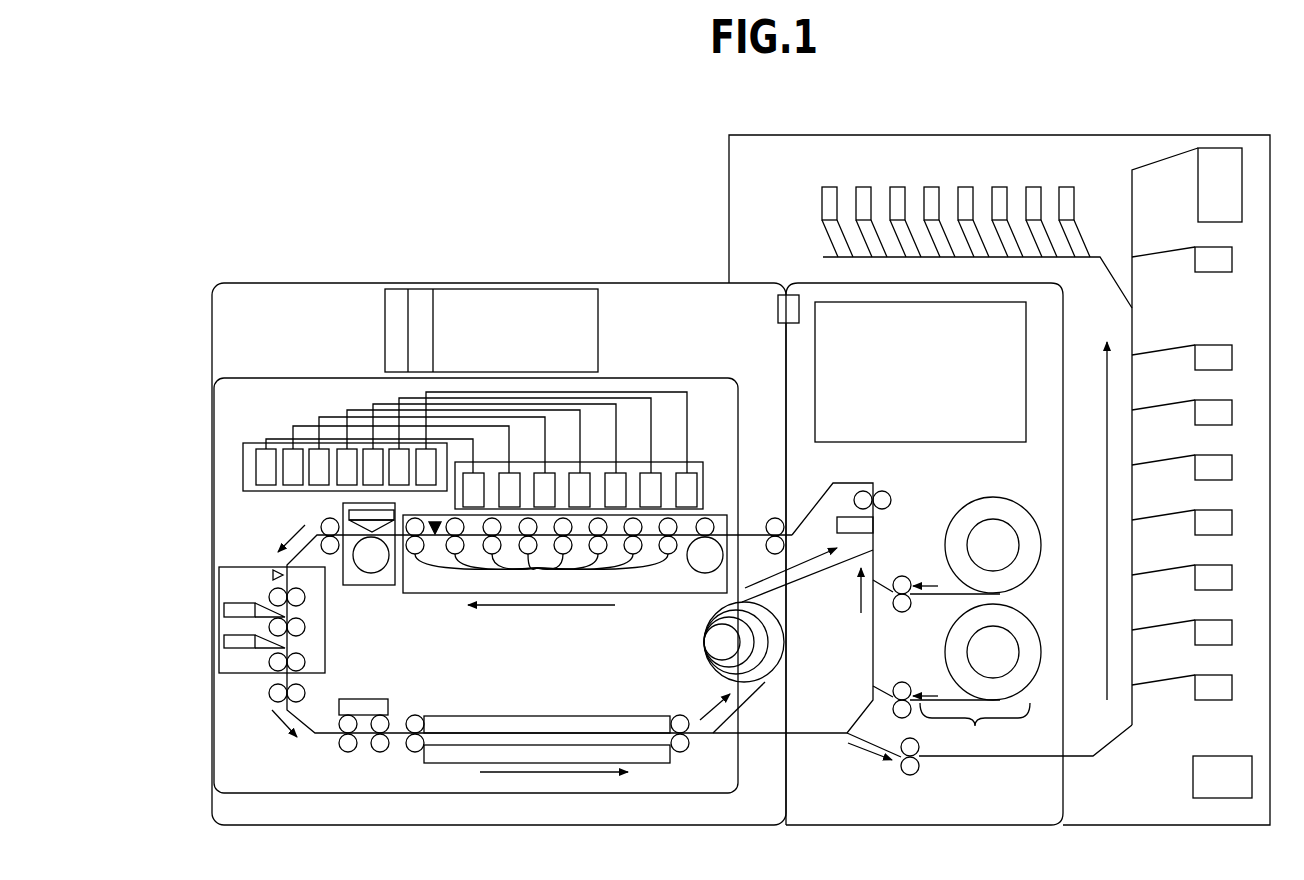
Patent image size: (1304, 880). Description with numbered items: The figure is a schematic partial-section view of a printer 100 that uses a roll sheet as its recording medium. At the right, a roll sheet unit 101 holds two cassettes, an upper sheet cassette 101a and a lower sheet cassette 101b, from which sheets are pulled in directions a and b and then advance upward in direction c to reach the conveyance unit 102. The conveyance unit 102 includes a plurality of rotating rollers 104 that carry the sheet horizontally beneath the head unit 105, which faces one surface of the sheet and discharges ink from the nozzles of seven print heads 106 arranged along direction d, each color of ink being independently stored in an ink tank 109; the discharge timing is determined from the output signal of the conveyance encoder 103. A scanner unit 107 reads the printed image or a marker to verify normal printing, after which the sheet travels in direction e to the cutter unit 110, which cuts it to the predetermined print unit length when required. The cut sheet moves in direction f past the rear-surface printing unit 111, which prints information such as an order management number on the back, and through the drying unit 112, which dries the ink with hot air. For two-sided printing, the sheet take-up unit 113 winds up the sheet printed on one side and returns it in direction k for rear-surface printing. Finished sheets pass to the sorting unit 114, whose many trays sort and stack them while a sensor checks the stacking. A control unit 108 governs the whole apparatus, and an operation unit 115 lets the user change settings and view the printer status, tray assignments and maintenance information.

The printer 100 is at (952, 135).
The roll sheet unit 101 is at (975, 727).
The upper sheet cassette 101a is at (933, 546).
The lower sheet cassette 101b is at (933, 653).
The conveyance unit 102 is at (447, 596).
The conveyance encoder 103 is at (703, 562).
The rotating roller 104 is at (541, 574).
The head unit 105 is at (705, 463).
The print head 106 is at (478, 481).
The scanner unit 107 is at (371, 586).
The control unit 108 is at (385, 330).
The ink tank 109 is at (422, 453).
The cutter unit 110 is at (325, 637).
The rear-surface printing unit 111 is at (410, 687).
The drying unit 112 is at (503, 716).
The sheet take-up unit 113 is at (703, 643).
The sorting unit 114 is at (729, 206).
The operation unit 115 is at (962, 442).